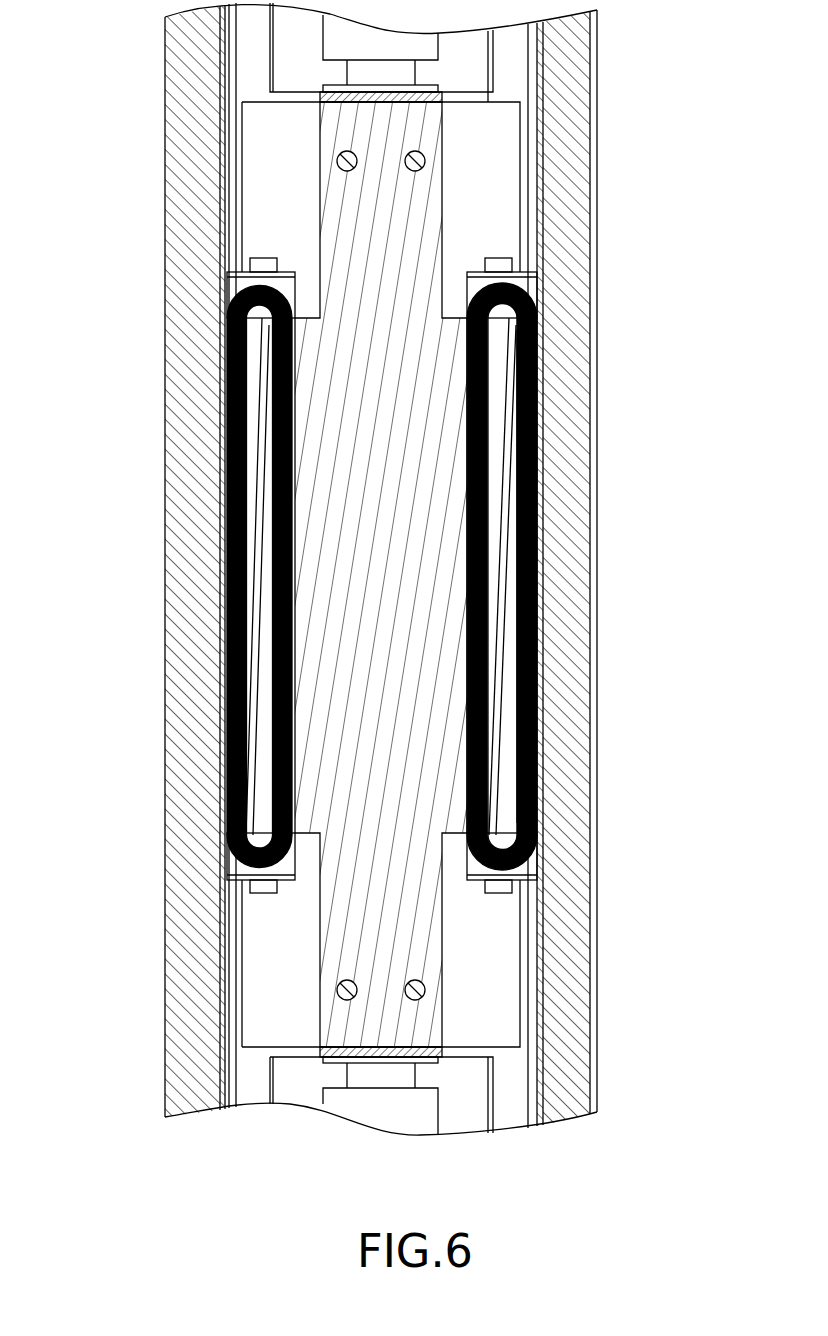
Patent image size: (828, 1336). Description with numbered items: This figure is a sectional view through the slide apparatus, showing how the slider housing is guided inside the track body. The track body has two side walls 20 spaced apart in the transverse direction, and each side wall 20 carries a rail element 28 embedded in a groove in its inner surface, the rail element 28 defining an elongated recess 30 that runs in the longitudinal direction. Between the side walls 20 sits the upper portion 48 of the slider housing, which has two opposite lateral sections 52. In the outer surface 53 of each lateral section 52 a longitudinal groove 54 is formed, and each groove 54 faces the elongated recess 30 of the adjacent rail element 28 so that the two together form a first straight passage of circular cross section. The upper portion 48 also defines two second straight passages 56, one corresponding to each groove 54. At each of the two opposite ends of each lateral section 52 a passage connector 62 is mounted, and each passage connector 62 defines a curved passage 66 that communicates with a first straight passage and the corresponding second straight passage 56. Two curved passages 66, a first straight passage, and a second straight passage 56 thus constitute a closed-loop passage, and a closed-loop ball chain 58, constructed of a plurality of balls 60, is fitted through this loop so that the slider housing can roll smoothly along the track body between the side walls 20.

The side wall 20 is at (193, 972).
The rail element 28 is at (540, 955).
The elongated recess 30 is at (230, 595).
The upper portion 48 is at (425, 462).
The lateral section 52 is at (258, 437).
The outer surface 53 is at (230, 387).
The groove 54 is at (230, 518).
The second straight passage 56 is at (270, 647).
The closed-loop ball chain 58 is at (198, 738).
The ball 60 is at (540, 488).
The passage connector 62 is at (233, 288).
The curved passage 66 is at (237, 300).